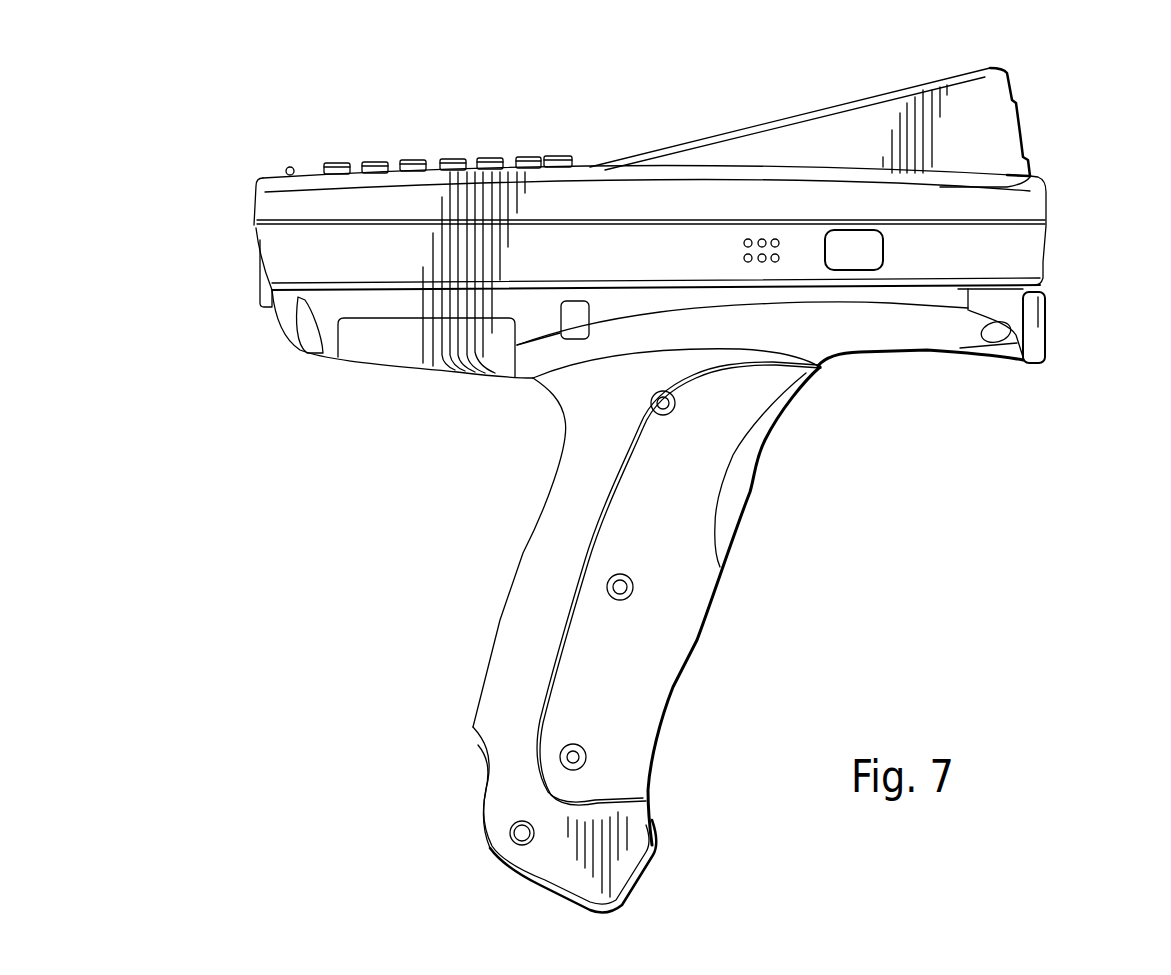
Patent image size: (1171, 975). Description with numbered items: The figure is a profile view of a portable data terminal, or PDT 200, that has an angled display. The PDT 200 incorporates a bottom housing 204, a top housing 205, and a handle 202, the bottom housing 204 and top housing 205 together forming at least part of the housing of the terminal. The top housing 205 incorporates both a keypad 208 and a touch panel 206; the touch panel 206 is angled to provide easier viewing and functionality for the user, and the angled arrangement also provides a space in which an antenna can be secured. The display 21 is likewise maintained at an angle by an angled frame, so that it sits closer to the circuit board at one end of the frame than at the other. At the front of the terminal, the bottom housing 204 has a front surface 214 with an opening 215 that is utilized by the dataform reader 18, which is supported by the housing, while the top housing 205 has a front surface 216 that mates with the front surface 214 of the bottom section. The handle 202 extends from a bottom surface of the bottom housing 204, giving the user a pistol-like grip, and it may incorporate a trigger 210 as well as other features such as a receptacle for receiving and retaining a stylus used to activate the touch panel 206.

The PDT 200 is at (918, 445).
The handle 202 is at (503, 618).
The bottom housing section 204 is at (392, 258).
The top housing section 205 is at (283, 200).
The touch panel 206 is at (880, 95).
The keypad 208 is at (453, 157).
The display 21 is at (753, 133).
The front surface of the top housing section 216 is at (1037, 197).
The dataform reader 18 is at (1040, 318).
The opening 215 is at (1033, 350).
The front surface of the bottom housing section 214 is at (1021, 360).
The trigger 210 is at (740, 473).